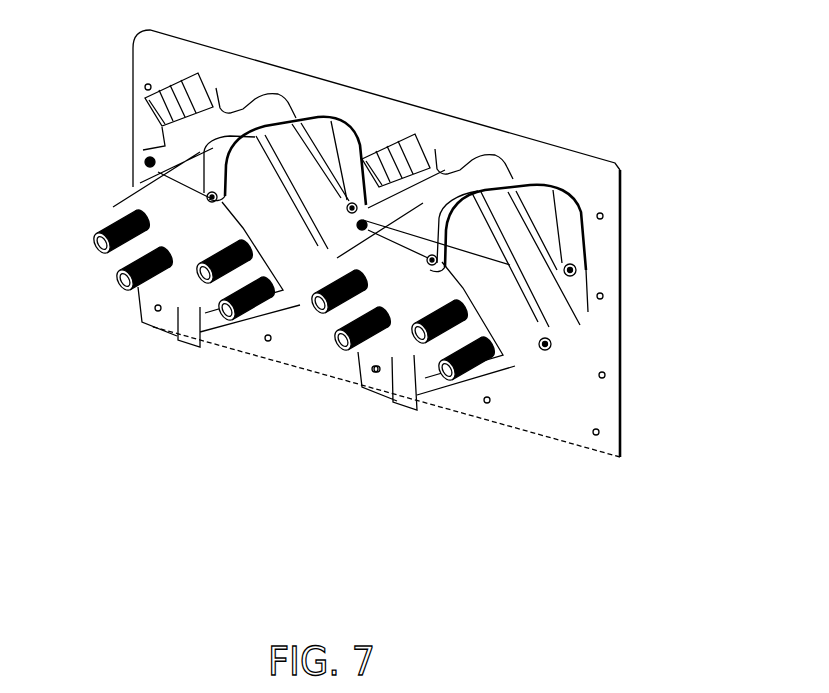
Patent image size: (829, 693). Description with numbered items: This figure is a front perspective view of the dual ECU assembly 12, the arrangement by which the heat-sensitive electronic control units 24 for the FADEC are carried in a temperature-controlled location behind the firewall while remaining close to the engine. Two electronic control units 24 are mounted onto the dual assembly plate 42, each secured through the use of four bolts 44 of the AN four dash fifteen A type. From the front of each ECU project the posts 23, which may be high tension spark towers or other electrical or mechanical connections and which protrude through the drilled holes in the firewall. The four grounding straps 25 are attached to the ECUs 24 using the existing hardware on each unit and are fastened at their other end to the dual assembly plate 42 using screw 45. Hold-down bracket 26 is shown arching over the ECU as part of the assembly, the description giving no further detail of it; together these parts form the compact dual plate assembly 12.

The dual ECU assembly 12 is at (383, 269).
The posts 23 is at (125, 280).
The electronic control units 24 is at (216, 88).
The grounding straps 25 is at (507, 187).
The hold-down bracket 26 is at (308, 108).
The dual assembly plate 42 is at (617, 307).
The AN4-15A bolts 44 is at (556, 345).
The screw 45 is at (584, 267).